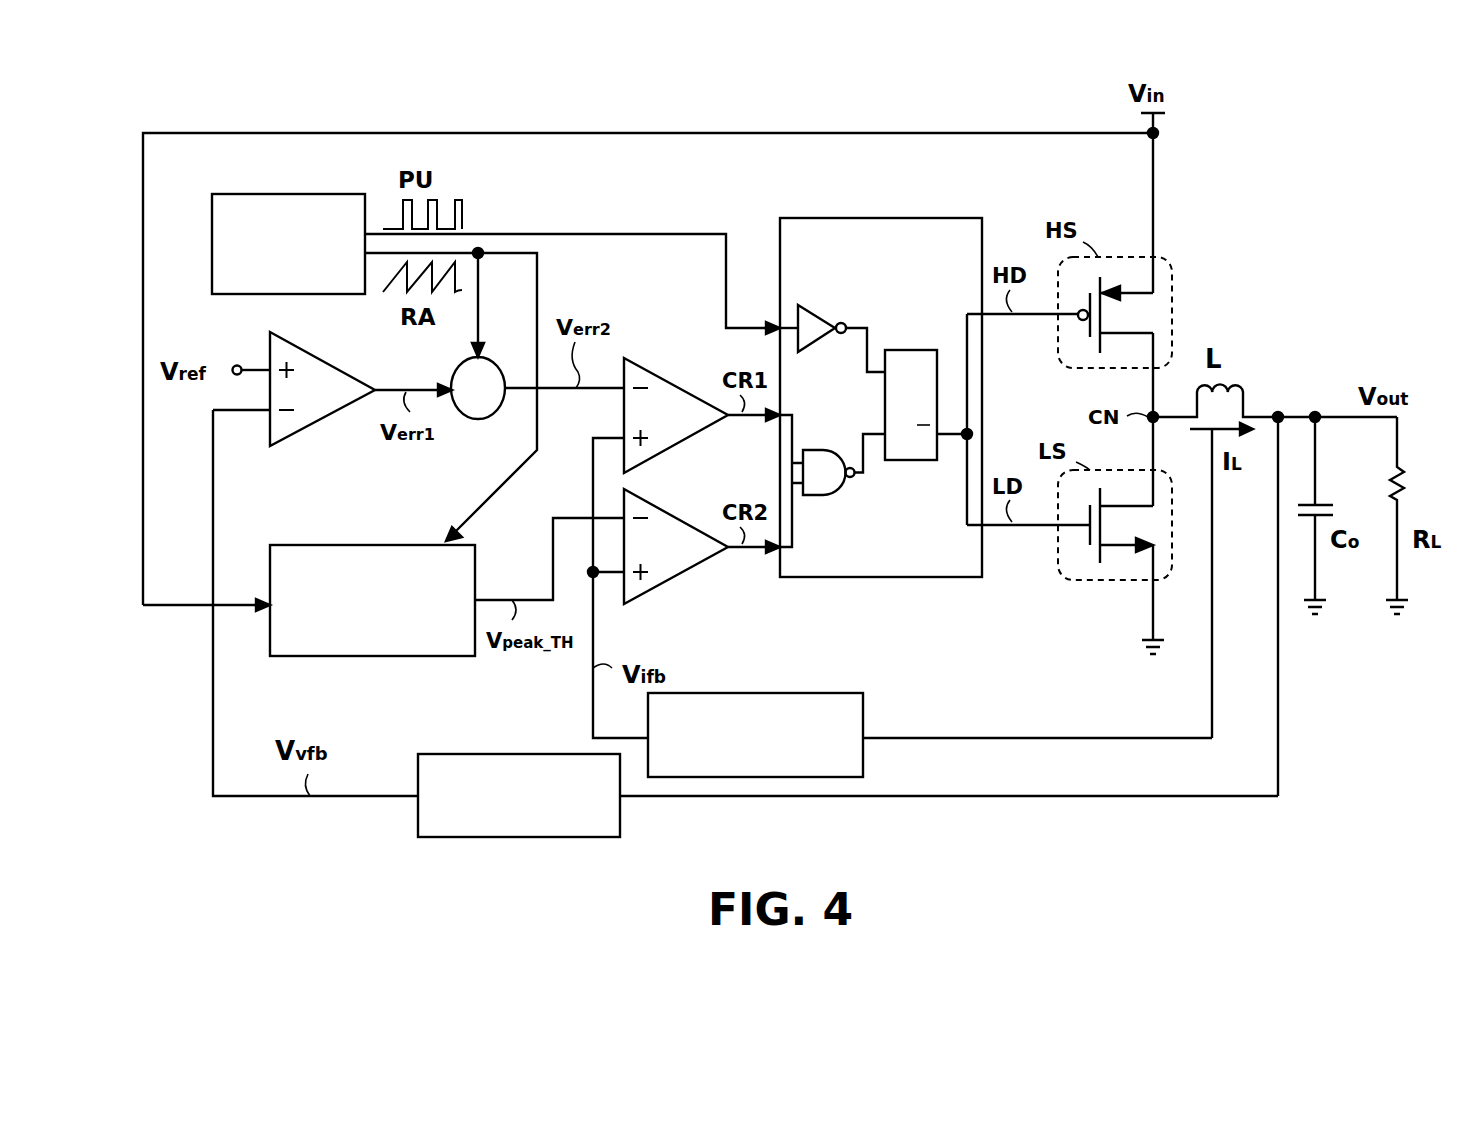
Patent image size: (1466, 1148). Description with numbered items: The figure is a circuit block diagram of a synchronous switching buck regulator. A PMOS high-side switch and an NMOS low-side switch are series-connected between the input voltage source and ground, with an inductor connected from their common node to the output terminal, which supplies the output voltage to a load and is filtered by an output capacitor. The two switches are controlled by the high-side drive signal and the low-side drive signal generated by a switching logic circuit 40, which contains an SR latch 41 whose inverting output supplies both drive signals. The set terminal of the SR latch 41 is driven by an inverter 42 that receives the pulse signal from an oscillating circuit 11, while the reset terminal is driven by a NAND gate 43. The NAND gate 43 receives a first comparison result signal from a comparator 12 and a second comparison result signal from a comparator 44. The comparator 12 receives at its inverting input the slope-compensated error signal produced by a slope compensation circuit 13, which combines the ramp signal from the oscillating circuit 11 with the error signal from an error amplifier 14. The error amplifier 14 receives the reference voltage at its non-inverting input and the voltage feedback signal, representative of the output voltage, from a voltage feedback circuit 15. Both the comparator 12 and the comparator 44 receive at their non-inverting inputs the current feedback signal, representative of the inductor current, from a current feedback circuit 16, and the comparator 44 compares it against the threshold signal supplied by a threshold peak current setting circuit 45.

The oscillating circuit 11 is at (287, 194).
The comparator 12 is at (686, 386).
The slope compensation circuit 13 is at (478, 420).
The error amplifier 14 is at (304, 432).
The voltage feedback circuit 15 is at (452, 754).
The current feedback circuit 16 is at (740, 693).
The switching logic circuit 40 is at (880, 218).
The SR latch 41 is at (913, 460).
The inverter 42 is at (818, 352).
The NAND gate 43 is at (815, 495).
The comparator 44 is at (686, 518).
The threshold peak current setting circuit 45 is at (345, 545).